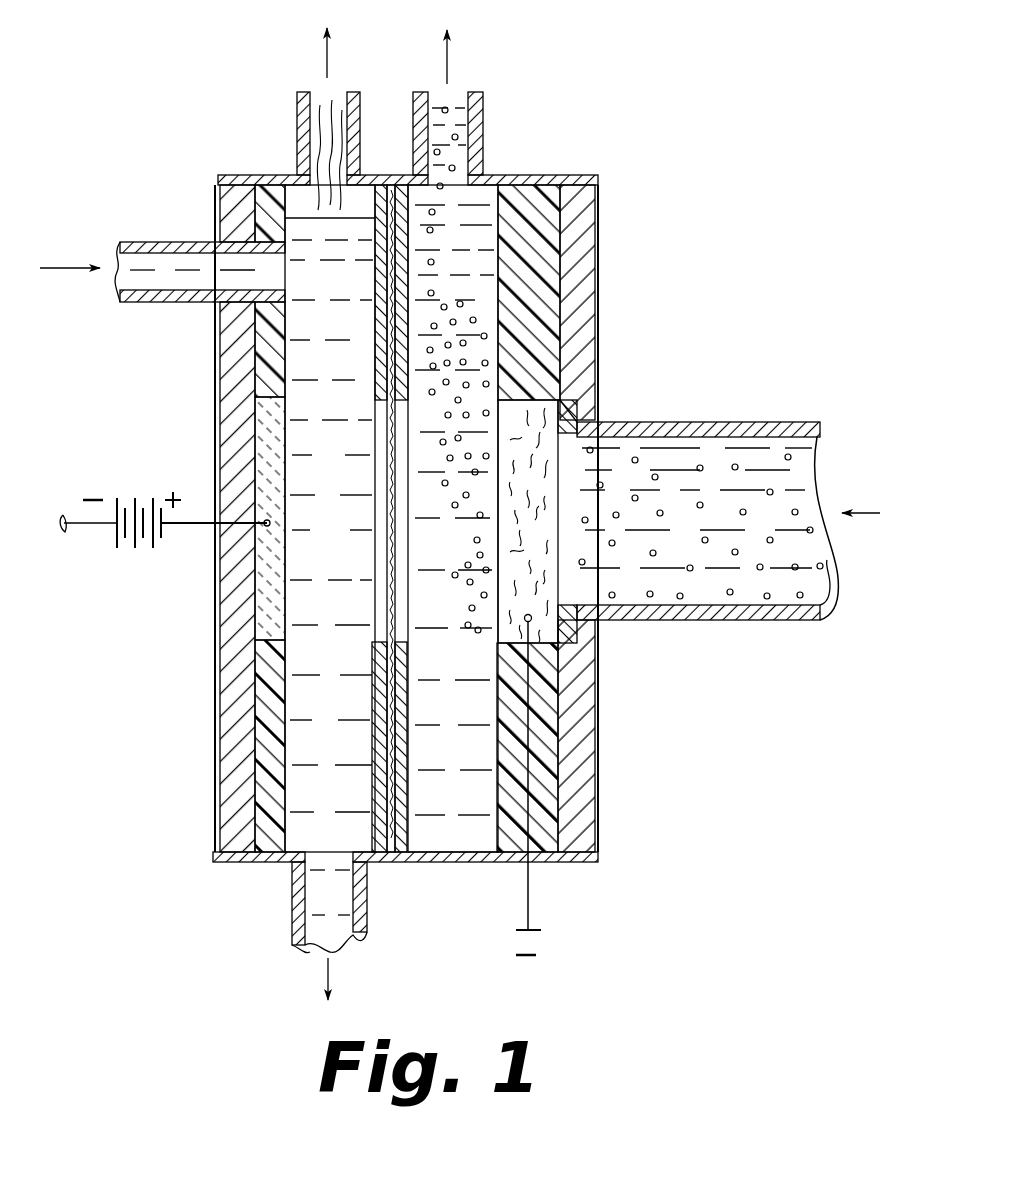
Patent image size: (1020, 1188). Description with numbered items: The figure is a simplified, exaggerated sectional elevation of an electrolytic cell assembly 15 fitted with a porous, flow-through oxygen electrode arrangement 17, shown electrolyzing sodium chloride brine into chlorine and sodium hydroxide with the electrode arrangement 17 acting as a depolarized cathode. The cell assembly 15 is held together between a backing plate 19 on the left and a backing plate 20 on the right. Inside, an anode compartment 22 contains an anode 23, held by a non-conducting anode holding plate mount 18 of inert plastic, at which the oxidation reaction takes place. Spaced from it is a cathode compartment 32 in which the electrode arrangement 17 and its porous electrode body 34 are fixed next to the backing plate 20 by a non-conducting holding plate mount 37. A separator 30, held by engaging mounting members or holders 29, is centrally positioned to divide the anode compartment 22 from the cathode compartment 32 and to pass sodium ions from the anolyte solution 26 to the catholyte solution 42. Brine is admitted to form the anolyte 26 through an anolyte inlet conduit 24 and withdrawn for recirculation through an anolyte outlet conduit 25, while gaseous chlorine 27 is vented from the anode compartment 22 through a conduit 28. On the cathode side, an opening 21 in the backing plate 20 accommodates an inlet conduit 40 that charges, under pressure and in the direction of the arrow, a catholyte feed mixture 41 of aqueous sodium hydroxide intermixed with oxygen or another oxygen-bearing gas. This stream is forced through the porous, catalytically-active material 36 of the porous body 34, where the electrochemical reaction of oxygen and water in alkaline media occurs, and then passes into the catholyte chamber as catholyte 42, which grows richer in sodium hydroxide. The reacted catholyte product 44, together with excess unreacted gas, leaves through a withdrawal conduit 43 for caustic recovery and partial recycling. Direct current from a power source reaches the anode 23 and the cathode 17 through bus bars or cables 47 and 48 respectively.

The electrolytic cell assembly 15 is at (168, 160).
The porous, flow-through, oxygen electrode arrangement 17 is at (560, 167).
The anode holding plate mount 18 is at (272, 195).
The backing plate 19 is at (232, 790).
The backing plate 20 is at (585, 265).
The opening 21 is at (580, 410).
The anode compartment 22 is at (352, 564).
The anode 23 is at (283, 605).
The anolyte inlet conduit 24 is at (292, 915).
The anolyte outlet conduit 25 is at (180, 296).
The anolyte solution 26 is at (295, 680).
The gaseous chlorine 27 is at (335, 100).
The conduit 28 is at (302, 110).
The mounting members or holders 29 is at (405, 185).
The separator 30 is at (390, 185).
The cathode compartment 32 is at (466, 556).
The porous electrode body 34 is at (492, 595).
The porous, catalytically-active material 36 is at (548, 630).
The holding plate mount 37 is at (545, 243).
The inlet conduit 40 is at (722, 422).
The catholyte feed mixture 41 is at (728, 614).
The catholyte solution 42 is at (462, 843).
The withdrawal conduit 43 is at (482, 150).
The reacted catholyte product 44 is at (485, 108).
The bus bar or cable 47 is at (187, 530).
The bus bar or cable 48 is at (535, 888).